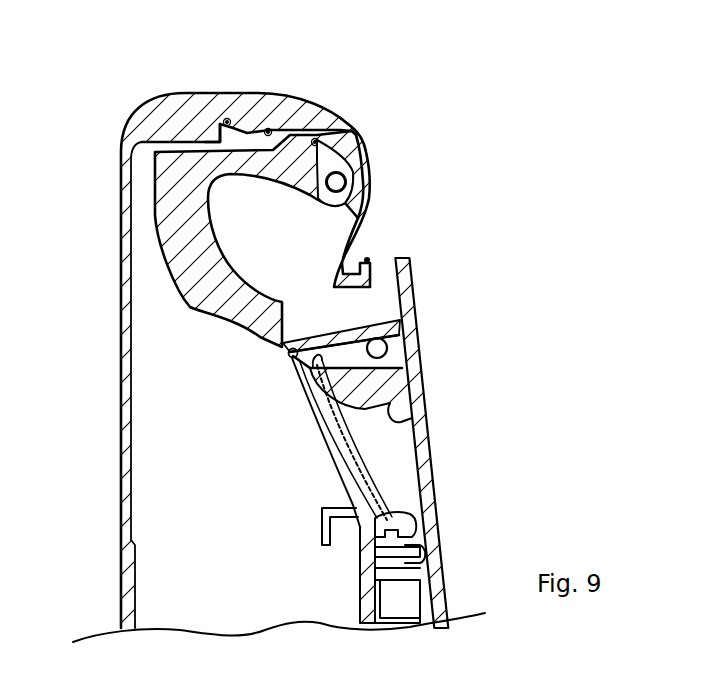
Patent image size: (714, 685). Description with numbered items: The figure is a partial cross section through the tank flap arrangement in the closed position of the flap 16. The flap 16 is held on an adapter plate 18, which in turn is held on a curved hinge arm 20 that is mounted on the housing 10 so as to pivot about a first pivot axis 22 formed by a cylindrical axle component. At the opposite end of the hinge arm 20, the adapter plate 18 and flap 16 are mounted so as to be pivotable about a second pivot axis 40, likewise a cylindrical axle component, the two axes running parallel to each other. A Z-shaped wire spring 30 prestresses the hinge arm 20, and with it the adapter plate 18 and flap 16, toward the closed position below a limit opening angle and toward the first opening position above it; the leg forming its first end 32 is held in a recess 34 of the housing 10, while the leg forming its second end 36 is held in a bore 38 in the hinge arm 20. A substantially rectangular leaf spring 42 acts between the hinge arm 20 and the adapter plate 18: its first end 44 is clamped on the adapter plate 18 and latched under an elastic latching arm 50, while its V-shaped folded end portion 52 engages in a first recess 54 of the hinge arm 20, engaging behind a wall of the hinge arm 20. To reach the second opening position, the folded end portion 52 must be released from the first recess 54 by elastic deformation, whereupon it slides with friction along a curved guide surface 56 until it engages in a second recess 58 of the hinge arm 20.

The housing 10 is at (121, 412).
The flap 16 is at (423, 440).
The adapter plate 18 is at (352, 492).
The hinge arm 20 is at (165, 190).
The first pivot axis 22 is at (340, 184).
The wire spring 30 is at (268, 128).
The first end 32 is at (227, 118).
The recess 34 is at (219, 108).
The second end 36 is at (315, 138).
The bore 38 is at (340, 131).
The second pivot axis 40 is at (387, 348).
The leaf spring 42 is at (387, 517).
The first end 44 is at (368, 533).
The elastic latching arm 50 is at (418, 522).
The folded end portion 52 is at (300, 386).
The first recess 54 is at (333, 348).
The curved guide surface 56 is at (326, 443).
The second recess 58 is at (413, 418).